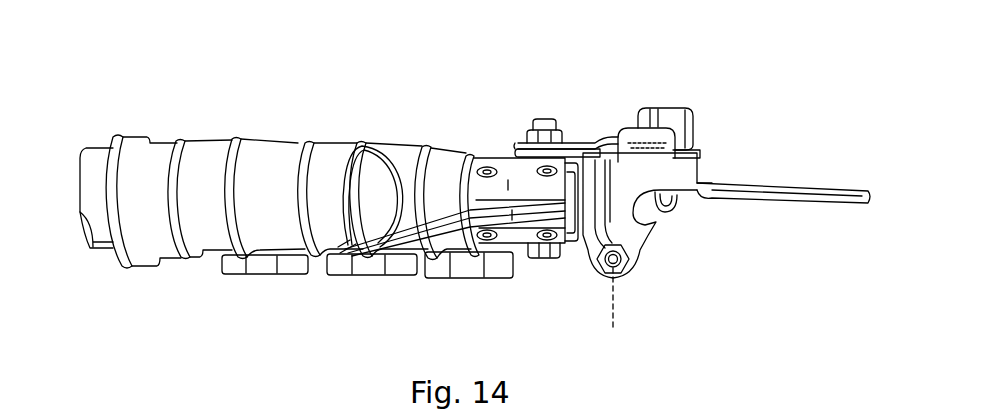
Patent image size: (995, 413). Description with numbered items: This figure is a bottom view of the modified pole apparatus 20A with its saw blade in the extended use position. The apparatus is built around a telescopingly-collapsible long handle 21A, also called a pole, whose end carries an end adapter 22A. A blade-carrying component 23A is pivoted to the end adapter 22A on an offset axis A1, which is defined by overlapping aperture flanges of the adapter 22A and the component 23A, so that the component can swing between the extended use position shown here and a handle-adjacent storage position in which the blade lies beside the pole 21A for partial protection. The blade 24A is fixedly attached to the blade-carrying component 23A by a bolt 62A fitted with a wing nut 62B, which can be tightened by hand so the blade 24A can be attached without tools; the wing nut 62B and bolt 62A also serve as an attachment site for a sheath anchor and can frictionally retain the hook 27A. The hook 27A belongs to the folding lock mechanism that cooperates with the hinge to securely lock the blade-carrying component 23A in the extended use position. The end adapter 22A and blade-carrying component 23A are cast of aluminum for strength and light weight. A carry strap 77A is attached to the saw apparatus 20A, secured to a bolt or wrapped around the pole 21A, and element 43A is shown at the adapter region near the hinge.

The pole apparatus 20A is at (408, 86).
The carry strap 77A is at (358, 150).
The long handle 21A is at (436, 143).
The end adapter 22A is at (506, 148).
The hook 27A is at (580, 146).
The bolt 43A is at (548, 259).
The blade-carrying component 23A is at (655, 223).
The offset axis A1 is at (618, 305).
The wing nut 62B is at (674, 112).
The bolt 62A is at (678, 203).
The blade 24A is at (776, 186).